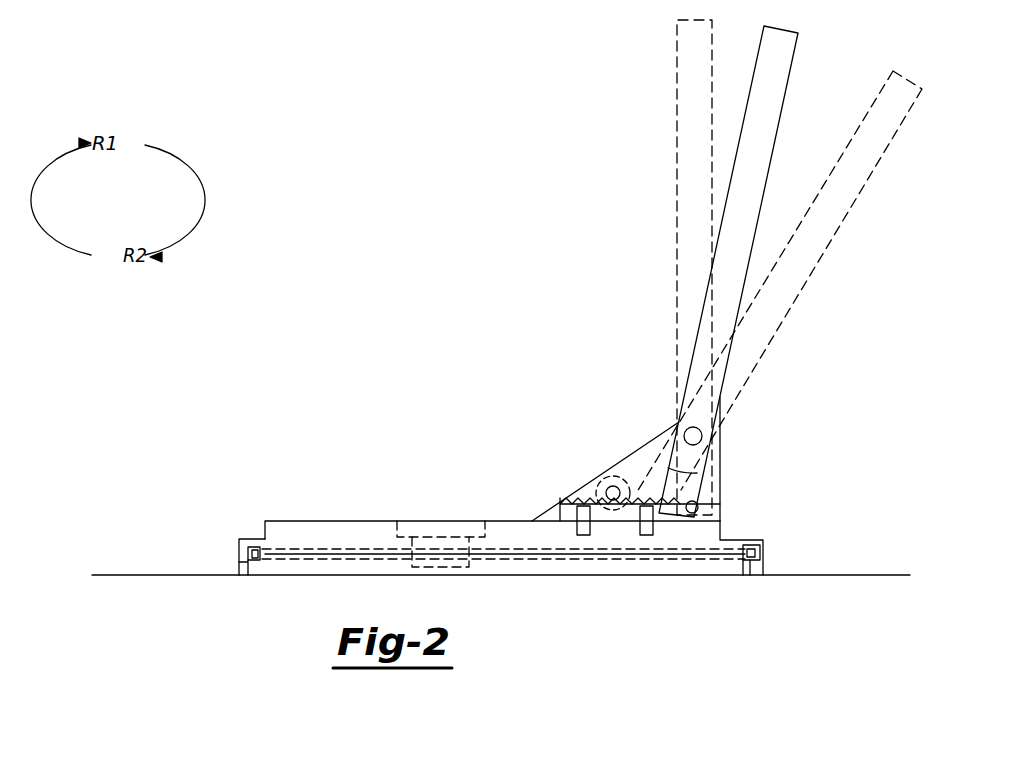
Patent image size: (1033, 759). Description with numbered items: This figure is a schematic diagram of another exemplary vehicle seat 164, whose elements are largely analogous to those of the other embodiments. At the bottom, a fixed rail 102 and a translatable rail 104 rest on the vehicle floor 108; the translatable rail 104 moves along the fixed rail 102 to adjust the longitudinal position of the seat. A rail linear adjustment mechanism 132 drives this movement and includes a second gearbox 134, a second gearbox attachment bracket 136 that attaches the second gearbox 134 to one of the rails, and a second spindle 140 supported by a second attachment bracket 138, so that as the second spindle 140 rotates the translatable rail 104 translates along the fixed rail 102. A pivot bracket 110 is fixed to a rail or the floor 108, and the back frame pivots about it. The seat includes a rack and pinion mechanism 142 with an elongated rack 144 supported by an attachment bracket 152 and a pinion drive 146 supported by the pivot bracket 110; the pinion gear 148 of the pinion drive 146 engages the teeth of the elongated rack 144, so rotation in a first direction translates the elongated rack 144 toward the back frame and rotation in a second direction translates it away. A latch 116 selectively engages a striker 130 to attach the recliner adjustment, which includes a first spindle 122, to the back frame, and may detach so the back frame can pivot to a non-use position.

The fixed rail 102 is at (733, 543).
The translatable rail 104 is at (302, 535).
The vehicle floor 108 is at (140, 575).
The pivot bracket 110 is at (628, 463).
The latch 116 is at (698, 478).
The first spindle 122 is at (635, 490).
The striker 130 is at (698, 507).
The rail linear adjustment mechanism 132 is at (392, 448).
The second gearbox 134 is at (415, 528).
The second gearbox attachment bracket 136 is at (443, 528).
The second attachment bracket 138 is at (235, 560).
The second spindle 140 is at (512, 528).
The rack and pinion mechanism 142 is at (532, 405).
The elongated rack 144 is at (563, 503).
The pinion drive 146 is at (602, 480).
The pinion gear 148 is at (611, 498).
The attachment bracket 152 is at (583, 530).
The vehicle seat 164 is at (437, 87).